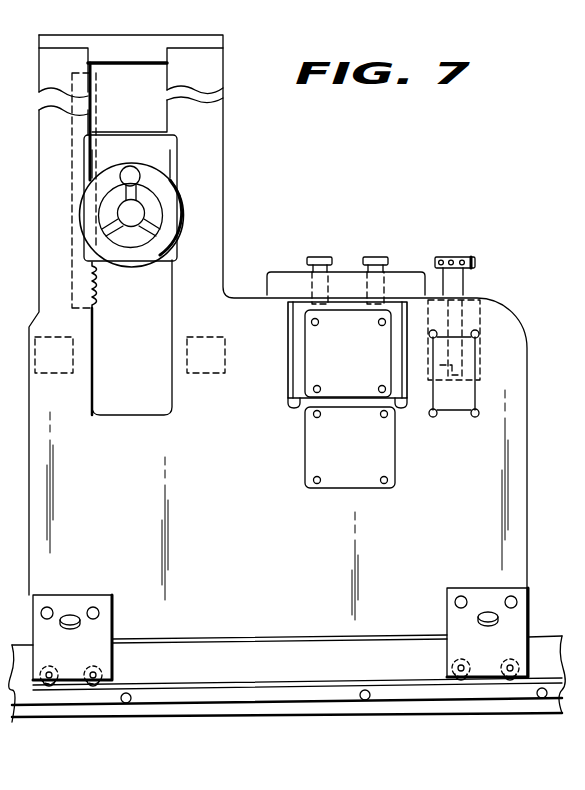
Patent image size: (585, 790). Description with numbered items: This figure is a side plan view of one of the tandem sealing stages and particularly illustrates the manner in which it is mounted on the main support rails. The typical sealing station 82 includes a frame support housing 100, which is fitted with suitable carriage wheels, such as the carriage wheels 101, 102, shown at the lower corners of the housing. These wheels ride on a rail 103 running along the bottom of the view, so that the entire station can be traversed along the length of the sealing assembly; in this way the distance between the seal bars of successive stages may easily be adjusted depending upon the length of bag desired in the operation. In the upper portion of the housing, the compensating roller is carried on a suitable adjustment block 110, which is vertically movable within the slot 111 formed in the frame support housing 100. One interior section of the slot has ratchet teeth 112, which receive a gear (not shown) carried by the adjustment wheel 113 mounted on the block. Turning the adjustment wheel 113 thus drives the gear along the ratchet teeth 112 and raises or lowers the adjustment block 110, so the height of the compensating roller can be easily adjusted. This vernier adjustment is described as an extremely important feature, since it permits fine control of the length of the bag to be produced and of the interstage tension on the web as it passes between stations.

The sealing station 82 is at (307, 220).
The frame support housing 100 is at (258, 525).
The carriage wheel 101 is at (103, 659).
The carriage wheel 102 is at (455, 648).
The guide rail 103 is at (285, 699).
The adjustment block 110 is at (155, 153).
The slot 111 is at (165, 308).
The ratchet teeth 112 is at (101, 277).
The adjustment wheel 113 is at (172, 207).